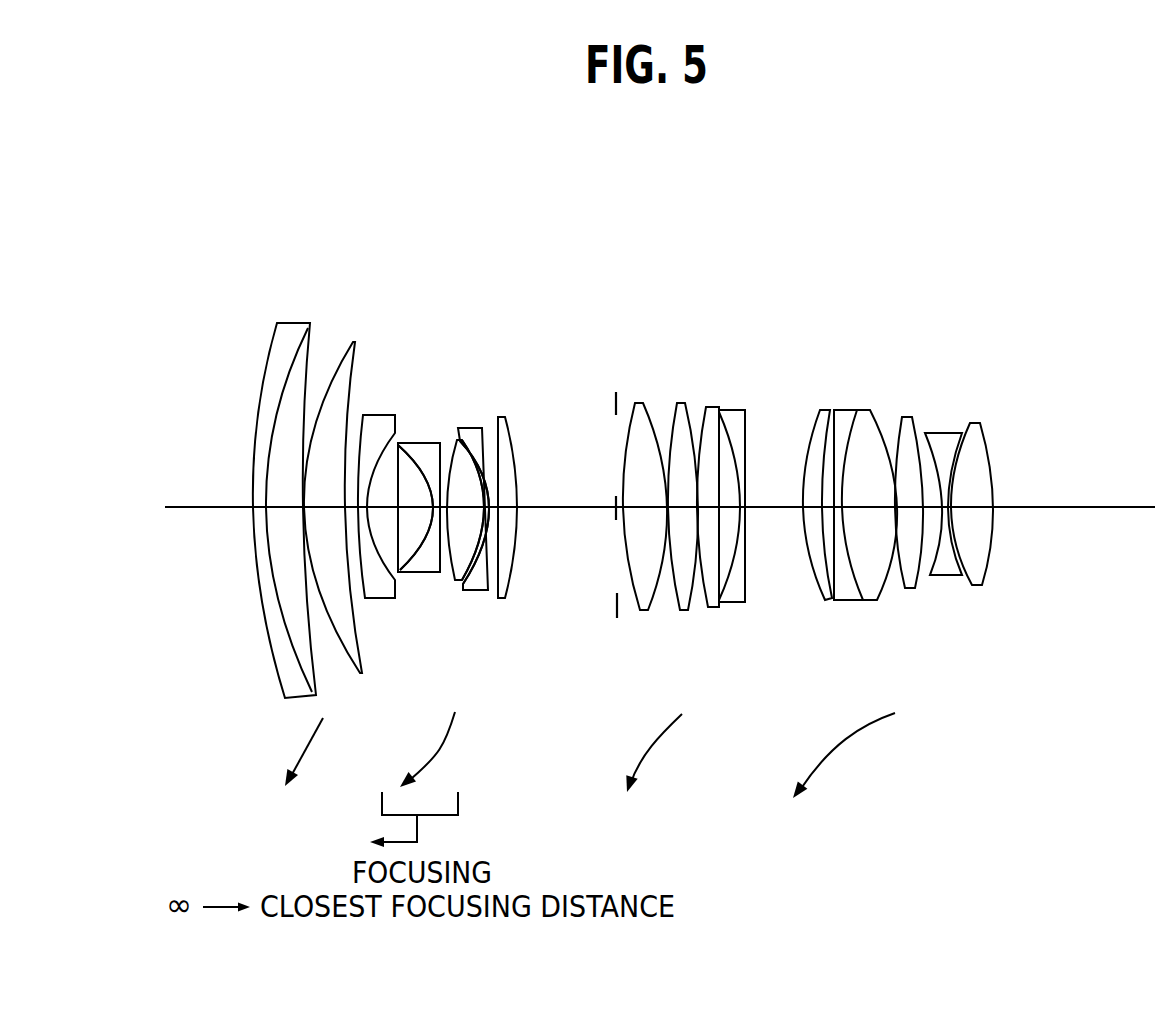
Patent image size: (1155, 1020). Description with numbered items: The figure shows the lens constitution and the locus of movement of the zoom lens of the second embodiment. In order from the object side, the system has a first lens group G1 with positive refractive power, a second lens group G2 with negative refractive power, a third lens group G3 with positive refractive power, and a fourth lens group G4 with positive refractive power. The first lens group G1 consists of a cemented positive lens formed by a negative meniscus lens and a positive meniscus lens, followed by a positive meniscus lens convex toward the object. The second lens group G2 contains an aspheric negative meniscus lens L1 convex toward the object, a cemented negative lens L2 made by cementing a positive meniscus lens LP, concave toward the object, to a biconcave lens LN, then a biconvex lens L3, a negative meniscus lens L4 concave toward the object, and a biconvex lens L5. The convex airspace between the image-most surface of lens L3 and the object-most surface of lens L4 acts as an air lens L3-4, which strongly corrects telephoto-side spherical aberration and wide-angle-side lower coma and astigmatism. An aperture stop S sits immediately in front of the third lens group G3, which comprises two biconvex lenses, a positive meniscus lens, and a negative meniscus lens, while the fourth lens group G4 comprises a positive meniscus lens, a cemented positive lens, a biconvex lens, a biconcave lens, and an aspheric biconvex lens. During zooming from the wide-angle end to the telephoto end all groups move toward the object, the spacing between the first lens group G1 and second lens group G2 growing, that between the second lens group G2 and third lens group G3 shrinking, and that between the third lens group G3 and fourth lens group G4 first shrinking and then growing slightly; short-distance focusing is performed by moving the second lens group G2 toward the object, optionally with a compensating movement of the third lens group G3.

The first lens group G1 is at (380, 237).
The second lens group G2 is at (484, 481).
The third lens group G3 is at (738, 235).
The fourth lens group G4 is at (972, 235).
The aspheric negative meniscus lens L1 is at (382, 415).
The cemented negative lens L2 is at (427, 426).
The biconcave lens LN is at (402, 440).
The positive meniscus lens LP is at (430, 440).
The biconvex lens L3 is at (457, 438).
The negative meniscus lens L4 is at (482, 428).
The air lens L3-4 is at (472, 538).
The biconvex lens L5 is at (505, 417).
The aperture stop S is at (615, 392).